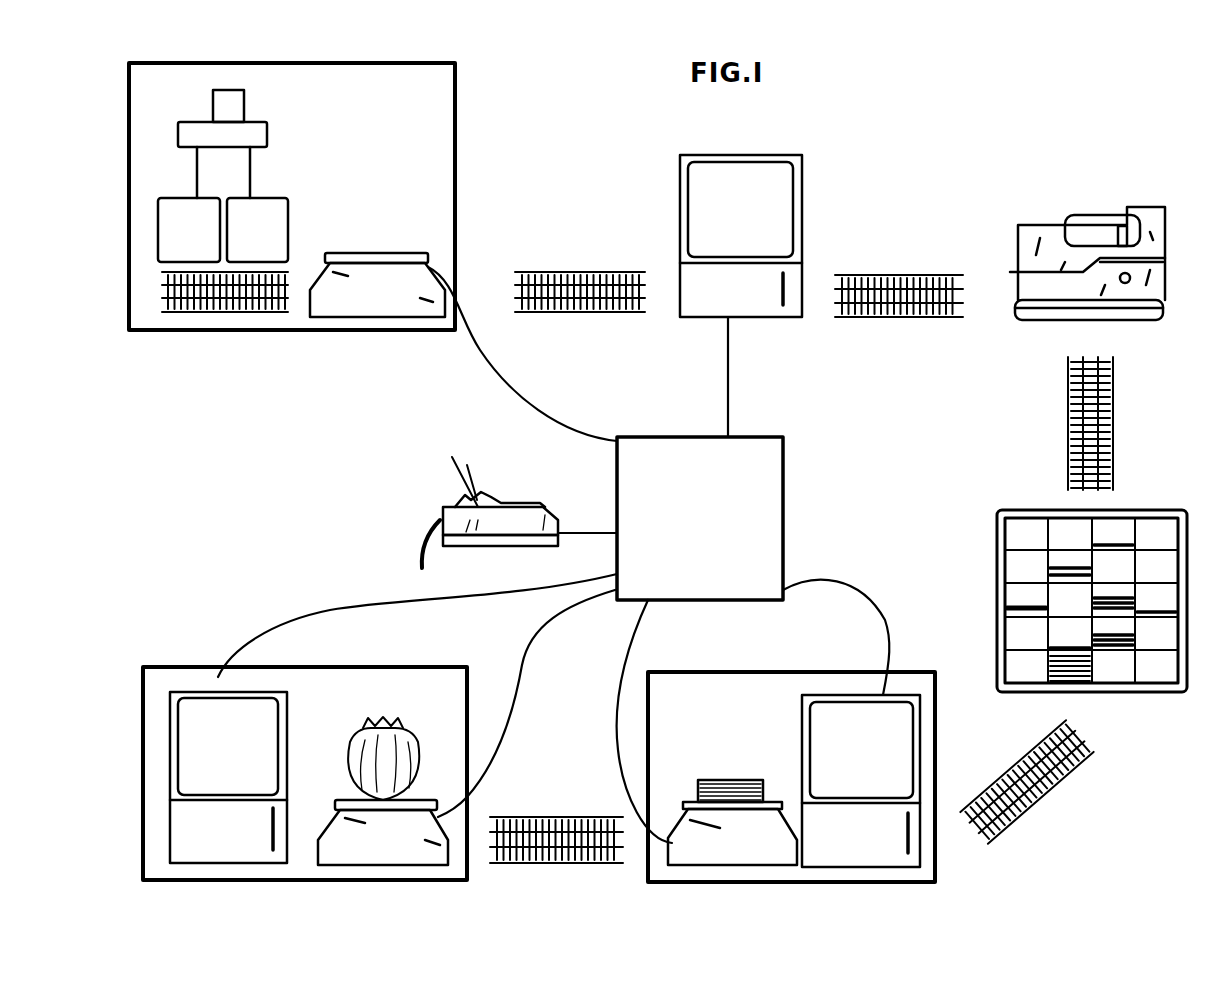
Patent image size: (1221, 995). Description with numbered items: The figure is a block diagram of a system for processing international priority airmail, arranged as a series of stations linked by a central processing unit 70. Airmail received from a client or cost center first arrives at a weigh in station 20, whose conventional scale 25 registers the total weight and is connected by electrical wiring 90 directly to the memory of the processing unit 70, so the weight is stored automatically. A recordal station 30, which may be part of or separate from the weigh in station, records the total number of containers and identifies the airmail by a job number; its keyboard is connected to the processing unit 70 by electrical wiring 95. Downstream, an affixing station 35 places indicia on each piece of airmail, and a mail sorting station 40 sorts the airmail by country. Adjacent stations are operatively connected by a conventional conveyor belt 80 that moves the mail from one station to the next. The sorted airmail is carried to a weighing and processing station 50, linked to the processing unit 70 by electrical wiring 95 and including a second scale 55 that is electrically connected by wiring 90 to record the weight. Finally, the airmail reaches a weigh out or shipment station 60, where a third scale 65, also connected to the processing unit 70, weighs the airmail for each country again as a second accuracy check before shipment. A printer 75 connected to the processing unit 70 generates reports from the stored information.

The weigh in station 20 is at (370, 100).
The scale 25 is at (400, 307).
The recordal station 30 is at (741, 212).
The affixing station 35 is at (1080, 200).
The mail sorting station 40 is at (1142, 702).
The weighing and processing station 50 is at (710, 702).
The scale 55 is at (763, 858).
The weigh out station 60 is at (443, 702).
The third scale 65 is at (412, 855).
The processing unit 70 is at (752, 518).
The printer 75 is at (438, 519).
The conveyor belt 80 is at (834, 588).
The electrical wiring 90 is at (550, 555).
The electrical wiring 95 is at (551, 506).